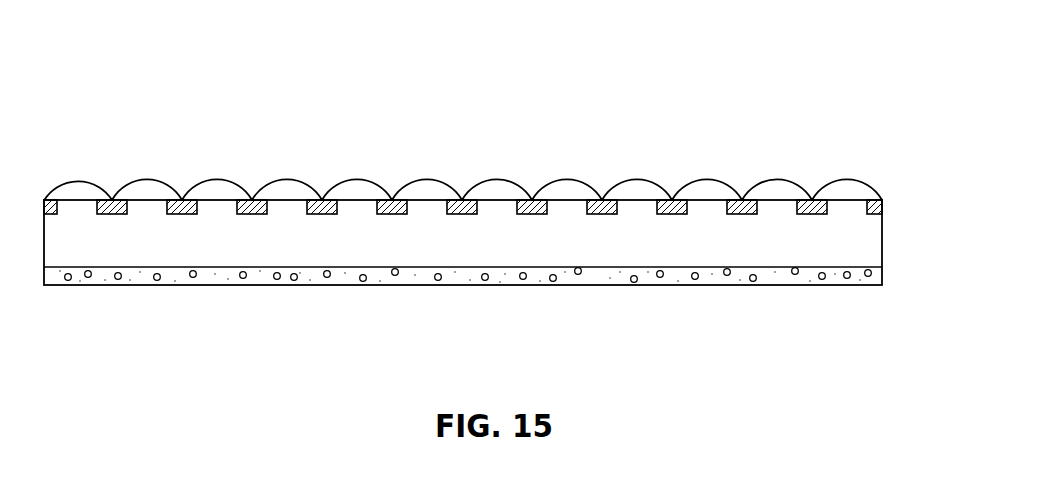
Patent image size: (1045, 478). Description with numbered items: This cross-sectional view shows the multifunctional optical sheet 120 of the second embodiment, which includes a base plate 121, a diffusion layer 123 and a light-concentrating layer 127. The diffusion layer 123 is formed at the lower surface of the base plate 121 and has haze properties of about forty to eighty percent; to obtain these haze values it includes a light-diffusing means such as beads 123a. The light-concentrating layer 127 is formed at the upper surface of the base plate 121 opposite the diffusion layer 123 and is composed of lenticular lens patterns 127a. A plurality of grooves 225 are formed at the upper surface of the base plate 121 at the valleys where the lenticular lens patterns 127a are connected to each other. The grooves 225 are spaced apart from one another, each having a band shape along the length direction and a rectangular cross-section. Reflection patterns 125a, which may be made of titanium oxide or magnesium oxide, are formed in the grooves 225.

The multifunctional optical sheet 120 is at (499, 187).
The base plate 121 is at (870, 237).
The diffusion layer 123 is at (463, 309).
The beads 123a is at (753, 281).
The reflection patterns 125a is at (742, 200).
The light-concentrating layer 127 is at (418, 176).
The lenticular lens patterns 127a is at (500, 187).
The grooves 225 is at (599, 222).